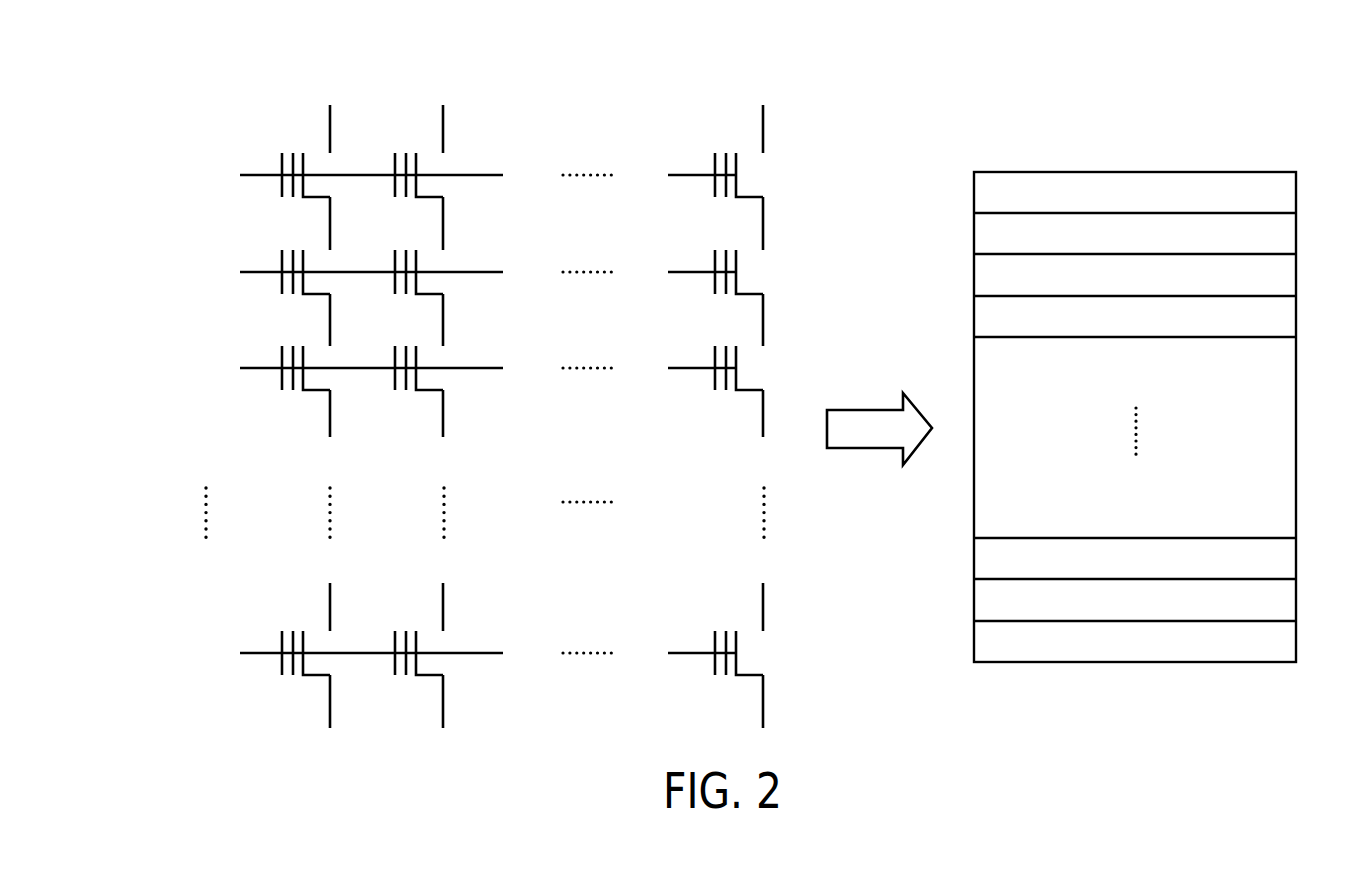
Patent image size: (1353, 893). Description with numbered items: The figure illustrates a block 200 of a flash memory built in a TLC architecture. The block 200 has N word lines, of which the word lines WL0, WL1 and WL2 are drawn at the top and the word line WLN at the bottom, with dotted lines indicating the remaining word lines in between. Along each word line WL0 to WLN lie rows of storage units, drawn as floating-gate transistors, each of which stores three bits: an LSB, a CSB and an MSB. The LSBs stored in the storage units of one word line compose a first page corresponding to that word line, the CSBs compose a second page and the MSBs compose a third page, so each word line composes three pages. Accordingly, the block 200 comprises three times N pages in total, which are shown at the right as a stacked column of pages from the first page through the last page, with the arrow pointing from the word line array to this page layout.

The block 200 is at (1236, 100).
The word line WL0 is at (455, 175).
The word line WL1 is at (455, 272).
The word line WL2 is at (455, 368).
The word line WLN is at (455, 653).